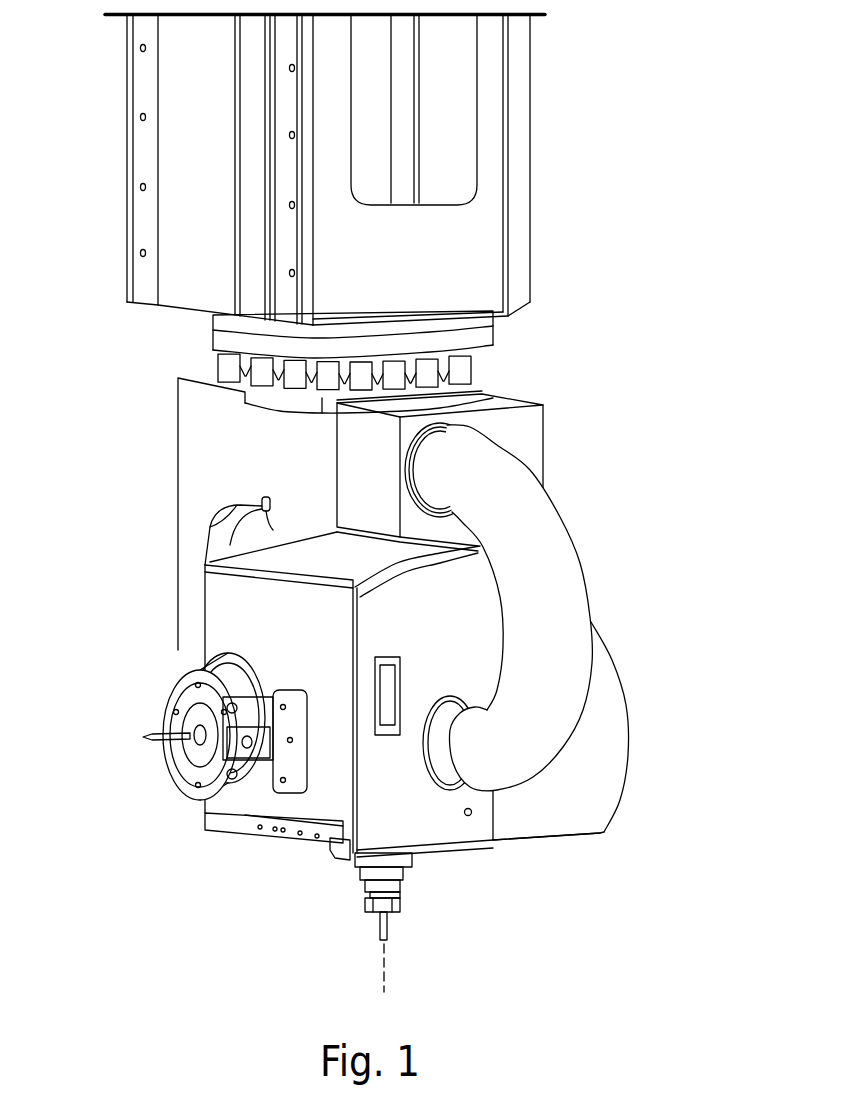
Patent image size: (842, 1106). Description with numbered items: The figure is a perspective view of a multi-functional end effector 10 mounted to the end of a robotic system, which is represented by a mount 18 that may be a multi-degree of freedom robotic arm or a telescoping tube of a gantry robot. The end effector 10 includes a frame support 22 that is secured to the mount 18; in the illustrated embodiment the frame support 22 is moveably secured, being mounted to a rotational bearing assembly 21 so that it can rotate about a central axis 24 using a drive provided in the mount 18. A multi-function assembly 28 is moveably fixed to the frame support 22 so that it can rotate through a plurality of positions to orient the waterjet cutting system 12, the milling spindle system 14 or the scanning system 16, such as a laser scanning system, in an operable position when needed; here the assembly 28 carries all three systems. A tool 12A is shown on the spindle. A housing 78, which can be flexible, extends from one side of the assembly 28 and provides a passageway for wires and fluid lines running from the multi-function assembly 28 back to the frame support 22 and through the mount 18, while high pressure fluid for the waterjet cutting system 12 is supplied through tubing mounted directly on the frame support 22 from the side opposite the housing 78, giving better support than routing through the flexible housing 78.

The multi-functional end effector 10 is at (708, 575).
The waterjet cutting system 12 is at (100, 672).
The tool 12A is at (155, 742).
The milling spindle system 14 is at (455, 899).
The scanning system 16 is at (641, 707).
The mount 18 is at (672, 243).
The rotational bearing assembly 21 is at (534, 352).
The frame support 22 is at (178, 482).
The central axis 24 is at (383, 955).
The multi-function assembly 28 is at (648, 813).
The housing 78 is at (577, 543).